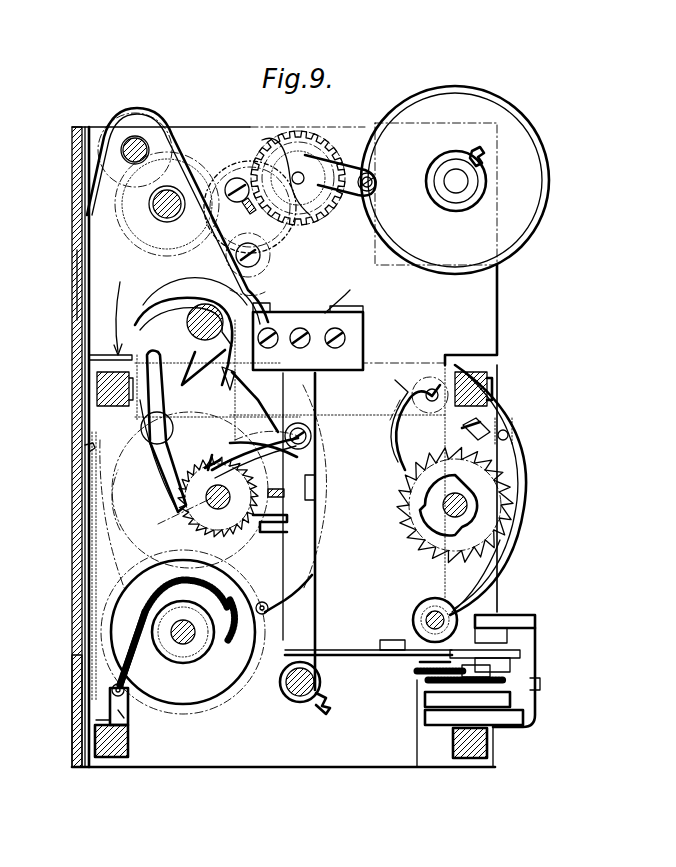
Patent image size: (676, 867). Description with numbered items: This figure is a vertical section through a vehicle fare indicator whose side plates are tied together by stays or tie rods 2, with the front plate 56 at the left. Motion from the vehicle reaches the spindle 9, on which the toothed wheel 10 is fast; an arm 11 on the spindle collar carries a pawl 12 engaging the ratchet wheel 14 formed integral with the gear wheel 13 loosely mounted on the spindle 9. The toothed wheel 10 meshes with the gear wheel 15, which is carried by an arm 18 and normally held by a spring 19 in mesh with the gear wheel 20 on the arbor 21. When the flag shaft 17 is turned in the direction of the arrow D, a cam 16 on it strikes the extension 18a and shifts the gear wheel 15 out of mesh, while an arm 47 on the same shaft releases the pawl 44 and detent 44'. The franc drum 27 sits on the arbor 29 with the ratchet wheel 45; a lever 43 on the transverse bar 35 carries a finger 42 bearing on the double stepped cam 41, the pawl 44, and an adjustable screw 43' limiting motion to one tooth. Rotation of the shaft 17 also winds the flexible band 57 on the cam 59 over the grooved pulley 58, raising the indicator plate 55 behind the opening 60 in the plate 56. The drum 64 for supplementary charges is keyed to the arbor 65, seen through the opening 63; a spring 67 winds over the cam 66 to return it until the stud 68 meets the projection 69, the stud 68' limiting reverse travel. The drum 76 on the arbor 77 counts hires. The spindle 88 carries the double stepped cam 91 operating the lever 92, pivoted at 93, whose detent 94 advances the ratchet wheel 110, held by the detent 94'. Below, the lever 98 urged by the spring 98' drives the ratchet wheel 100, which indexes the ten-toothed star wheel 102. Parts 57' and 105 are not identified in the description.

The stays or tie rods 2 is at (112, 745).
The spindle 9 is at (340, 140).
The toothed wheel 10 is at (335, 208).
The arm 11 is at (375, 186).
The pawl 12 is at (355, 165).
The gear wheel 13 is at (255, 160).
The ratchet wheel 14 is at (300, 140).
The gear wheel 15 is at (275, 285).
The cam 16 is at (195, 367).
The flag shaft 17 is at (161, 385).
The arm 18 is at (320, 235).
The extension 18a is at (346, 297).
The spring 19 is at (236, 177).
The gear wheel 20 is at (200, 160).
The arbor 21 is at (170, 134).
The drum 27 is at (184, 501).
The arbor 29 is at (162, 504).
The transverse bar 35 is at (294, 703).
The double stepped cam 41 is at (232, 528).
The finger 42 is at (270, 534).
The lever 43 is at (305, 531).
The adjustable screw 43' is at (294, 460).
The pawl 44 is at (187, 462).
The spring pressed detent 44' is at (141, 456).
The ratchet wheel 45 is at (237, 458).
The arm 47 is at (225, 385).
The indicator plate 55 is at (77, 283).
The front plate 56 is at (82, 445).
The flexible band 57 is at (265, 447).
The rack 57' is at (66, 566).
The grooved pulley 58 is at (137, 122).
The cam 59 is at (191, 326).
The opening 60 is at (80, 370).
The opening 63 is at (82, 628).
The drum 64 is at (174, 632).
The arbor 65 is at (183, 645).
The cam 66 is at (200, 652).
The spring 67 is at (128, 672).
The stud 68 is at (80, 690).
The stud 68' is at (249, 621).
The projection 69 is at (126, 718).
The drum 76 is at (522, 163).
The arbor 77 is at (455, 193).
The spindle 88 is at (430, 525).
The double stepped cam 91 is at (430, 493).
The lever 92 is at (520, 468).
The pivot 93 is at (500, 585).
The spring pressed detent 94 is at (505, 418).
The detent 94' is at (408, 423).
The lever 98 is at (421, 621).
The spring 98' is at (368, 643).
The ratchet wheel 100 is at (425, 672).
The star wheel 102 is at (445, 718).
The plate 105 is at (440, 694).
The ratchet wheel 110 is at (440, 510).
The arrow D is at (111, 304).